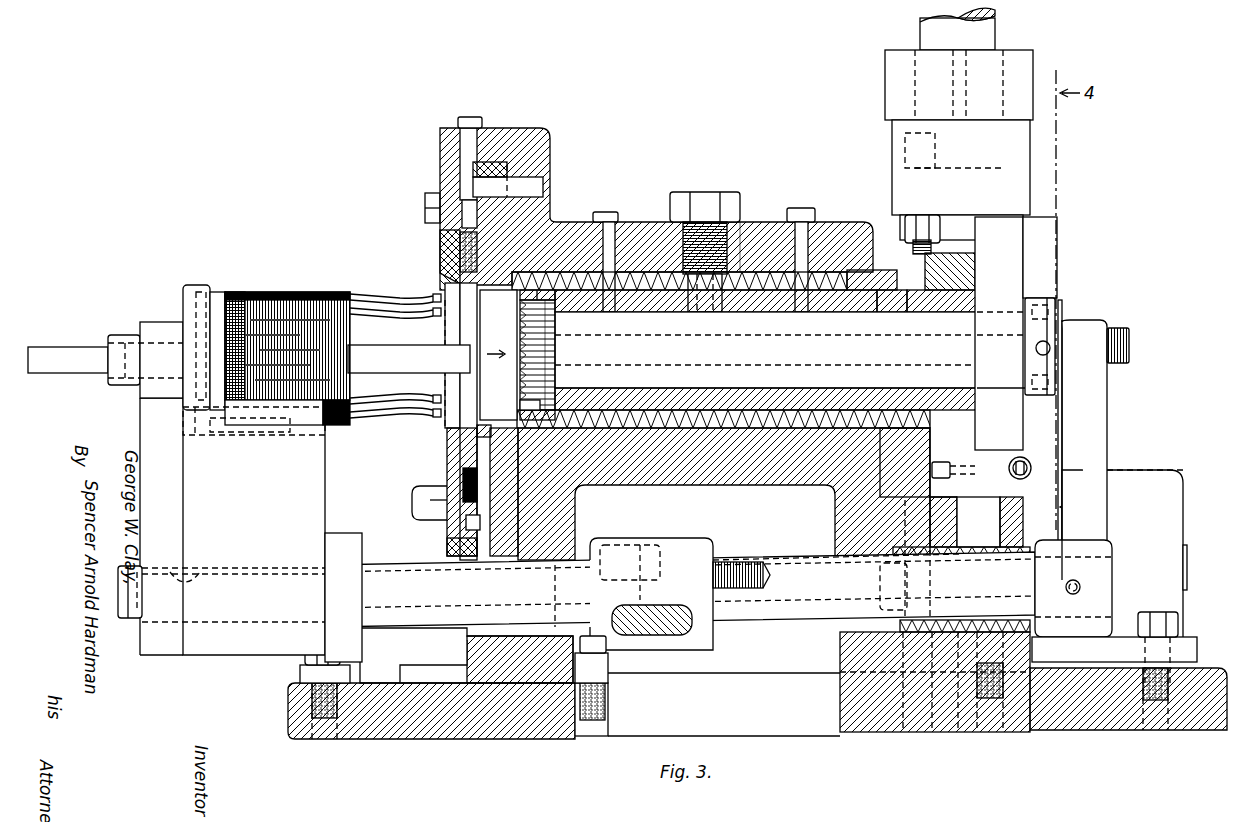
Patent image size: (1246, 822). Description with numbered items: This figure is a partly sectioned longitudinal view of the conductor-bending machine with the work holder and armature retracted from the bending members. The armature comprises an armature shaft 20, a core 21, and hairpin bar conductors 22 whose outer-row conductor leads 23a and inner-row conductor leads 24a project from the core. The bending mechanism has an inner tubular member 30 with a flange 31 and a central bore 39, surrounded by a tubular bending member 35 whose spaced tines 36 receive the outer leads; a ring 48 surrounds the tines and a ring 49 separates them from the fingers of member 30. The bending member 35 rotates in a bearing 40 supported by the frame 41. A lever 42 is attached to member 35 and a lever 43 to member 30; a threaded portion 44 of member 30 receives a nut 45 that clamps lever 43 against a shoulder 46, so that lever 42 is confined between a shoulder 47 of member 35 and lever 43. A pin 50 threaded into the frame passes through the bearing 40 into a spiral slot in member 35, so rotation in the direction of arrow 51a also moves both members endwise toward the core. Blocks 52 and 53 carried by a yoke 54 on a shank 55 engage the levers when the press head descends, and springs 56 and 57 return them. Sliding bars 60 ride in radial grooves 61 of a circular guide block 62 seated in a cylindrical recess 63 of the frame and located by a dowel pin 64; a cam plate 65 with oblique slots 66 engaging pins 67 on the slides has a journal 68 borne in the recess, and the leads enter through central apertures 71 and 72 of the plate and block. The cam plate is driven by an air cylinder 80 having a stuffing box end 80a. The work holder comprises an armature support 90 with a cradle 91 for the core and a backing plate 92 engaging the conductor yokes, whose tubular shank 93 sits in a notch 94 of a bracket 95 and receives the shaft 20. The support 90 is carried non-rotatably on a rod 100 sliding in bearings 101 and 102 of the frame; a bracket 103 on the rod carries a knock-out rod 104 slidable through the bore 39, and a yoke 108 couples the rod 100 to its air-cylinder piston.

The armature shaft 20 is at (62, 352).
The core 21 is at (280, 296).
The hairpin bar conductor 22 is at (218, 292).
The outer conductor lead 23a is at (400, 281).
The inner conductor lead 24a is at (402, 315).
The tubular member 30 is at (752, 325).
The flange 31 is at (545, 376).
The tubular bending member 35 is at (876, 290).
The tines 36 is at (522, 406).
The central bore 39 is at (517, 336).
The bearing 40 is at (828, 275).
The frame 41 is at (540, 140).
The lever 42 is at (958, 278).
The lever 43 is at (1012, 283).
The threaded portion 44 is at (1057, 314).
The nut 45 is at (1060, 300).
The shoulder 46 is at (975, 312).
The shoulder 47 is at (912, 292).
The ring 48 is at (536, 292).
The ring 49 is at (547, 298).
The pin 50 is at (715, 290).
The arrow 51a is at (498, 355).
The block 52 is at (900, 222).
The block 53 is at (1010, 228).
The yoke 54 is at (886, 96).
The shank 55 is at (930, 30).
The spring 56 is at (1028, 464).
The spring 57 is at (930, 468).
The sliding bar 60 is at (480, 456).
The radially extending groove 61 is at (486, 437).
The circular guide block 62 is at (508, 482).
The cylindrical recess 63 is at (488, 134).
The dowel pin 64 is at (548, 158).
The cam plate 65 is at (440, 144).
The oblique slot 66 is at (455, 524).
The pin 67 is at (458, 540).
The journal 68 is at (474, 562).
The central aperture 71 is at (462, 296).
The central aperture 72 is at (490, 302).
The cylinder 80 is at (425, 700).
The stuffing box end 80a is at (412, 518).
The armature support 90 is at (140, 510).
The cradle 91 is at (290, 414).
The backing plate 92 is at (197, 288).
The tubular shank 93 is at (116, 336).
The notch 94 is at (160, 324).
The bracket 95 is at (158, 395).
The rod 100 is at (1114, 580).
The bearing 101 is at (450, 637).
The bearing 102 is at (976, 522).
The bracket 103 is at (1098, 530).
The knock-out rod 104 is at (870, 330).
The yoke 108 is at (702, 640).